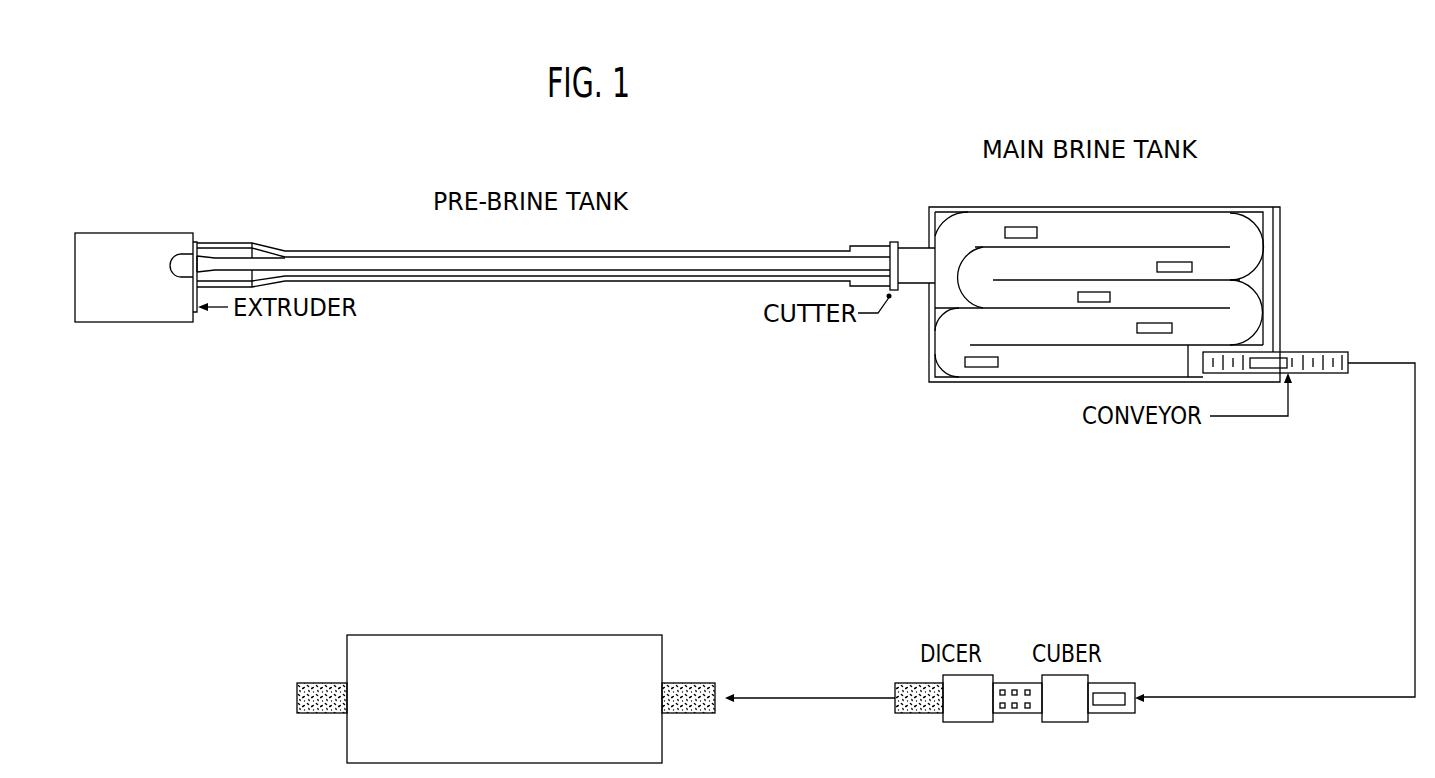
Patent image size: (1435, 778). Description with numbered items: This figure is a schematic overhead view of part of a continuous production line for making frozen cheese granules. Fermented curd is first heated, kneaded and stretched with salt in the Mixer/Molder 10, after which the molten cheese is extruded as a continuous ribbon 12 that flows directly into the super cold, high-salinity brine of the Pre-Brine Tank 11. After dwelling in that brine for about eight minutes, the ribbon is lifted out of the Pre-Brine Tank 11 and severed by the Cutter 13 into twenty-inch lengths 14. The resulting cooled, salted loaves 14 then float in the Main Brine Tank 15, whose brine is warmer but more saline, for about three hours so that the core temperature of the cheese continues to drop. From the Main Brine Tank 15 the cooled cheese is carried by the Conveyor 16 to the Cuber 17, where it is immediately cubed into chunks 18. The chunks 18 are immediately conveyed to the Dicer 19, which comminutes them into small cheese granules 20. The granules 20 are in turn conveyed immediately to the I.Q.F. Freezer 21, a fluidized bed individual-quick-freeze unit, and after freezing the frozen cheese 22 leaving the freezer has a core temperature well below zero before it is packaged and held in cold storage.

The Mixer/Molder 10 is at (138, 322).
The Pre-Brine Tank 11 is at (323, 250).
The continuous ribbon 12 is at (260, 259).
The Cutter 13 is at (894, 242).
The loaves 14 is at (1092, 292).
The Main Brine Tank 15 is at (1213, 207).
The Conveyor 16 is at (1318, 352).
The Cuber 17 is at (1073, 722).
The chunks 18 is at (1010, 713).
The Dicer 19 is at (950, 722).
The cheese granules 20 is at (903, 683).
The I.Q.F. Freezer 21 is at (617, 635).
The cheese 22 is at (323, 683).